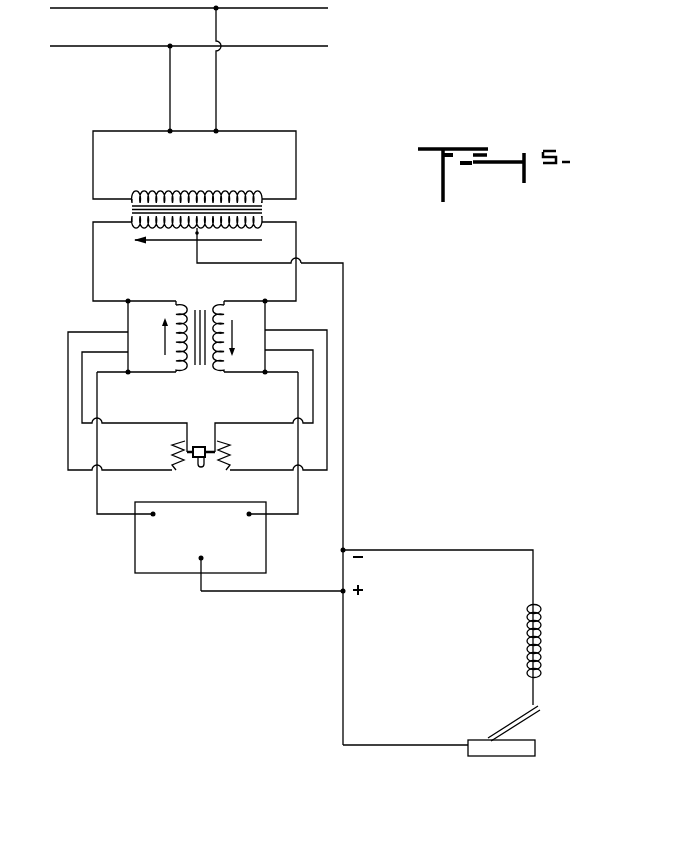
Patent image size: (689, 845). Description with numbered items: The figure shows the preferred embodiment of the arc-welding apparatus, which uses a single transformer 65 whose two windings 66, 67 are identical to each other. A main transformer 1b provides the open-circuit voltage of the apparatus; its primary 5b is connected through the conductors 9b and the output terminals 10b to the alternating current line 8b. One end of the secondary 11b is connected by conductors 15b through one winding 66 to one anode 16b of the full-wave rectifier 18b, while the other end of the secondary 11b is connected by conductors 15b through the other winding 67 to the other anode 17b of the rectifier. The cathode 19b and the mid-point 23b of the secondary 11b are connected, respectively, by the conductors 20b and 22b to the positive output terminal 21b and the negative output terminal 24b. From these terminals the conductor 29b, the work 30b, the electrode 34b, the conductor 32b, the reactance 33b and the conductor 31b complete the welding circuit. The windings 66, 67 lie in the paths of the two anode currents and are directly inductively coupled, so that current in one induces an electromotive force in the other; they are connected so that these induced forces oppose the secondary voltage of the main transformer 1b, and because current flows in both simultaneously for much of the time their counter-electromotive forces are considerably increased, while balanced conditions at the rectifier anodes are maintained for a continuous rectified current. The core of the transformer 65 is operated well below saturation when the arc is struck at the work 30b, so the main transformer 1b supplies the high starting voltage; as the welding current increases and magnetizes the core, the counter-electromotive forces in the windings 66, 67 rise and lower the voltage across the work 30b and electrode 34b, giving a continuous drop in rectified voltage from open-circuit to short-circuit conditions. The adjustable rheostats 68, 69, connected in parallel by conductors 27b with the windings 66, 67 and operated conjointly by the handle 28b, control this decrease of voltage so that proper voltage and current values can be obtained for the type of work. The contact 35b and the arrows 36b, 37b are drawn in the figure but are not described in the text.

The alternating current line 8b is at (318, 28).
The output terminals 10b is at (205, 142).
The conductors 9b is at (312, 170).
The primary 5b is at (226, 190).
The transformer 1b is at (183, 198).
The secondary 11b is at (262, 209).
The conductors 15b is at (308, 506).
The contact 35b is at (150, 240).
The mid-point of the secondary 23b is at (193, 237).
The movable contact arm 37b is at (252, 295).
The movable contact arm 36b is at (165, 344).
The winding 66 is at (176, 357).
The transformer 65 is at (196, 368).
The winding 67 is at (223, 373).
The conductors 27b is at (255, 480).
The adjustable rheostat 68 is at (170, 446).
The adjustable rheostat 69 is at (232, 452).
The handle 28b is at (201, 470).
The conductor 22b is at (343, 422).
The anode 16b is at (150, 518).
The anode 17b is at (249, 516).
The full-wave rectifier 18b is at (140, 573).
The cathode 19b is at (190, 568).
The conductor 20b is at (257, 591).
The positive output terminal 21b is at (338, 594).
The negative output terminal 24b is at (350, 545).
The conductor 31b is at (505, 533).
The reactance 33b is at (545, 638).
The conductor 32b is at (540, 696).
The electrode 34b is at (530, 722).
The work 30b is at (510, 756).
The conductor 29b is at (343, 693).